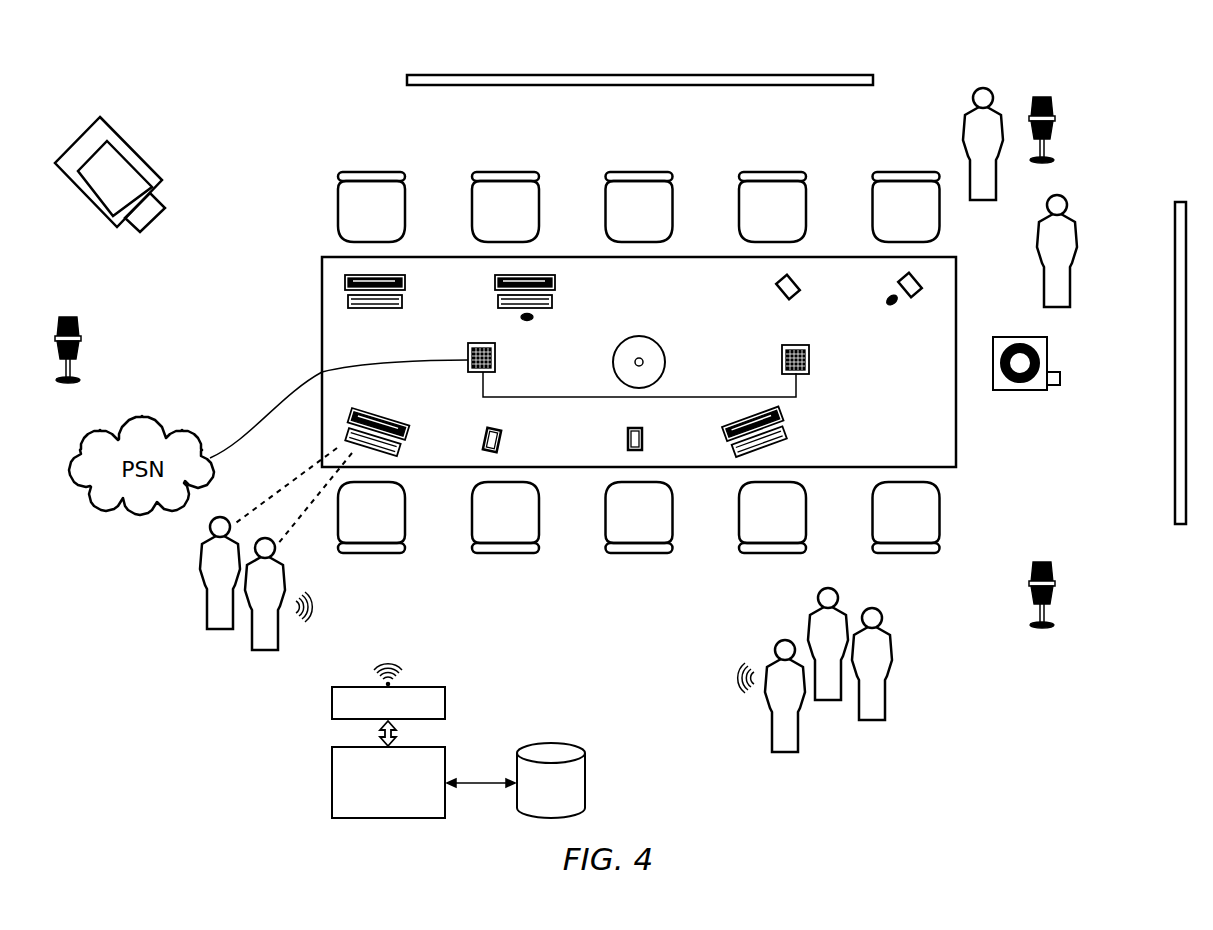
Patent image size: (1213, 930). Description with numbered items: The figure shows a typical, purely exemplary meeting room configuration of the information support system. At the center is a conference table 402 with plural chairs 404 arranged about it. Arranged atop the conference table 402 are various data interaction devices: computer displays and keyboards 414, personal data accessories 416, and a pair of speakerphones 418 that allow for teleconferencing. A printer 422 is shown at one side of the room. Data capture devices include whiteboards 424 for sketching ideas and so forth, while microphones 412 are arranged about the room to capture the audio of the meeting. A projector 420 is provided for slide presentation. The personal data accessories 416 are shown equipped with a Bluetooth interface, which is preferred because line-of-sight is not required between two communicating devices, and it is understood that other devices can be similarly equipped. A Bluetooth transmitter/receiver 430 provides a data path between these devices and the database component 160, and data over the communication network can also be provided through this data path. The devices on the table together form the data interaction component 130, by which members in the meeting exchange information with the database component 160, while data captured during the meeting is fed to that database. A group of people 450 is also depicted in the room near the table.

The conference table 402 is at (957, 435).
The chairs 404 is at (640, 554).
The microphones 412 is at (80, 338).
The computer displays and keyboards 414 is at (393, 310).
The personal data accessories 416 is at (797, 294).
The speakerphones 418 is at (497, 360).
The projector 420 is at (650, 338).
The printer 422 is at (132, 150).
The whiteboards 424 is at (598, 75).
The Bluetooth transceiver (BTR) 430 is at (332, 700).
The group of people 450 is at (903, 718).
The data interaction component 130 is at (368, 796).
The database component 160 is at (590, 782).